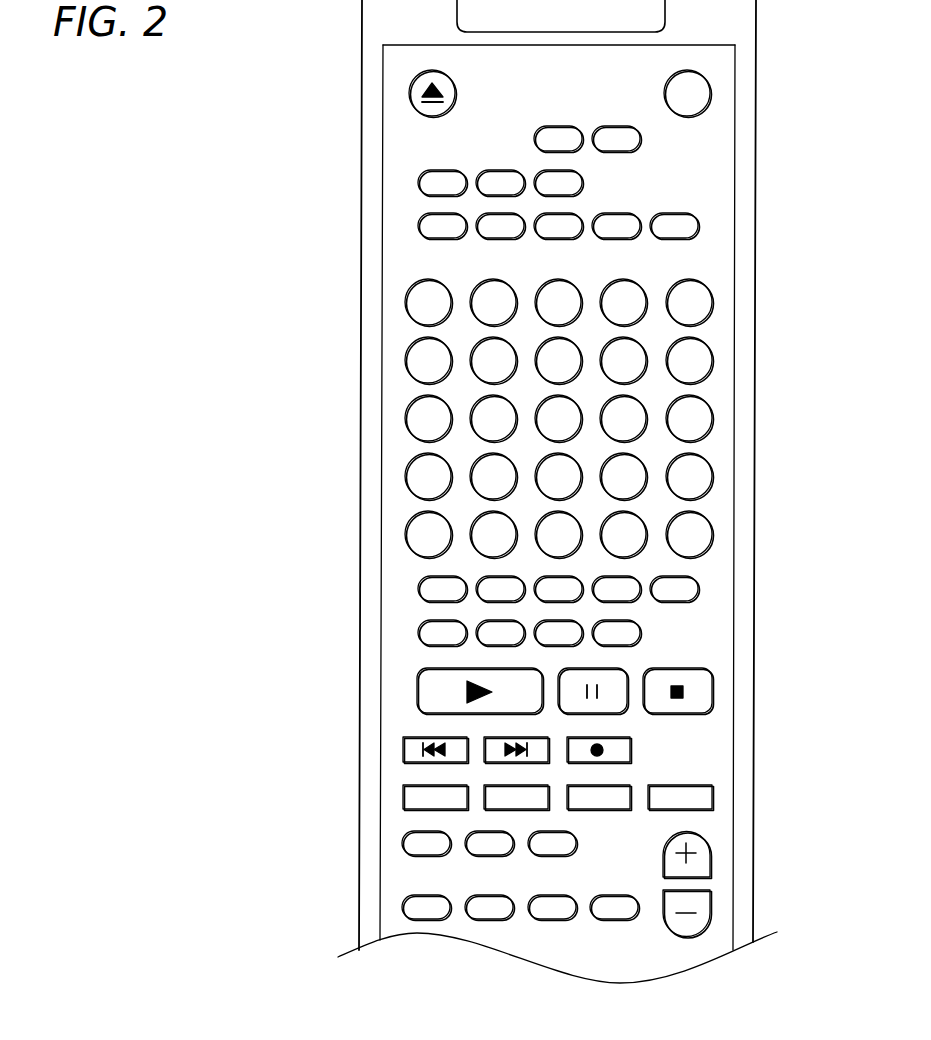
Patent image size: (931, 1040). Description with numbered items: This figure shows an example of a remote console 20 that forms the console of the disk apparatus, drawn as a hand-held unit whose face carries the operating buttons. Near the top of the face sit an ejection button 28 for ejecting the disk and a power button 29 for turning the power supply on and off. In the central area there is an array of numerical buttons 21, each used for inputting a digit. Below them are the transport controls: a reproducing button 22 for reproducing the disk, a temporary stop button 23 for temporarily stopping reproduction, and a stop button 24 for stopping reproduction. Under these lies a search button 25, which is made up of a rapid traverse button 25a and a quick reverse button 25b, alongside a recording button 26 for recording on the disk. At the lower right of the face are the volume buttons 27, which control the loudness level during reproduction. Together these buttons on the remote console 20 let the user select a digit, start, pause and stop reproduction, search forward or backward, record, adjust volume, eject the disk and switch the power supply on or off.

The remote console 20 is at (324, 438).
The numerical button 21 is at (762, 280).
The reproducing button 22 is at (417, 694).
The temporary stop button 23 is at (592, 668).
The stop button 24 is at (712, 692).
The search button 25 is at (393, 769).
The rapid traverse button 25a is at (518, 763).
The quick reverse button 25b is at (403, 753).
The recording button 26 is at (630, 750).
The volume buttons 27 is at (710, 858).
The ejection button 28 is at (409, 93).
The power button 29 is at (710, 93).